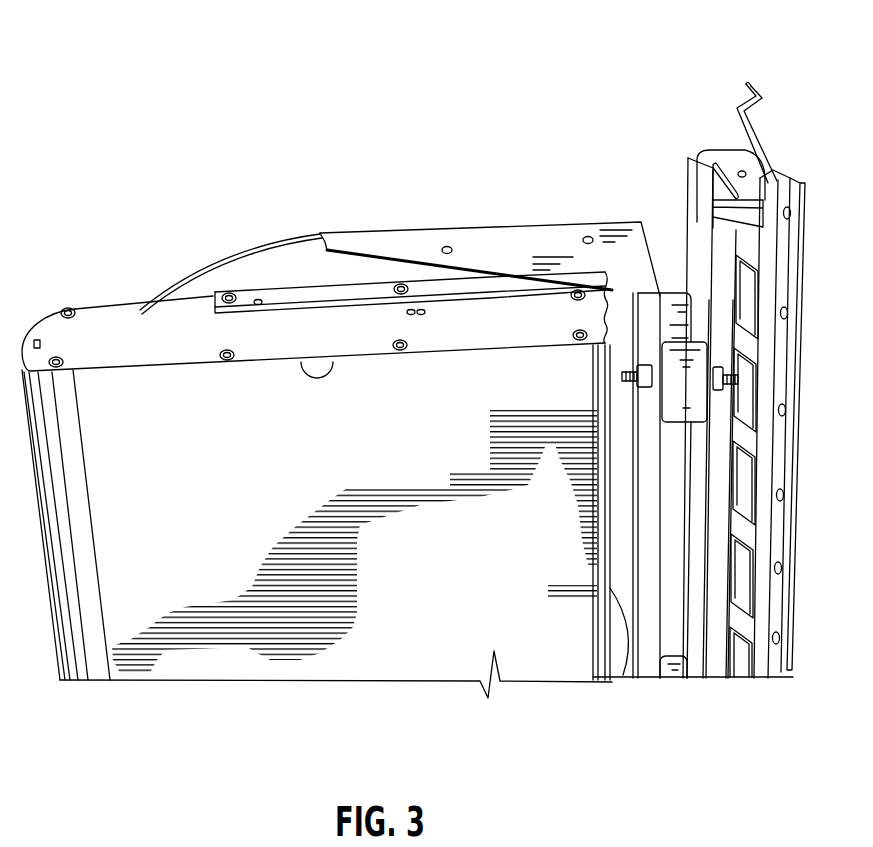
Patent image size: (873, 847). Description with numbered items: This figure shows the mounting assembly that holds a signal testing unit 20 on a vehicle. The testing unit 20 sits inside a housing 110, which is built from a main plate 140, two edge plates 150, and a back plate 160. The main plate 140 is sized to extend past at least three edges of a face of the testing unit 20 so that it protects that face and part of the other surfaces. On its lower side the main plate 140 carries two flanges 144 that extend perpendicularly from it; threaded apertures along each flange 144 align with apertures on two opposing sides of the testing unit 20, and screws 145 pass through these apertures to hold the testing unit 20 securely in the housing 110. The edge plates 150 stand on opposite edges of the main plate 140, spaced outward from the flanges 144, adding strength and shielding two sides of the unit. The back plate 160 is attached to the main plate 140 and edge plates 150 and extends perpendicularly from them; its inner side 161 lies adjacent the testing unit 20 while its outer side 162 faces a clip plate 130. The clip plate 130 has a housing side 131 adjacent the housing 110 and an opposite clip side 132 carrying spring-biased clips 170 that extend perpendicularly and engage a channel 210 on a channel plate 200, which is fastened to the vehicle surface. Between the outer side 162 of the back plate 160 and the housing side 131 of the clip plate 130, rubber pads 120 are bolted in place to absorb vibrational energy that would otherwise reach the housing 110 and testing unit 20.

The signal testing unit 20 is at (484, 574).
The housing 110 is at (448, 236).
The rubber pads 120 is at (675, 307).
The clip plate 130 is at (697, 543).
The housing side 131 is at (697, 220).
The clip side 132 is at (719, 652).
The main plate 140 is at (216, 275).
The flanges 144 is at (336, 295).
The screws 145 is at (234, 296).
The edge plates 150 is at (633, 282).
The back plate 160 is at (641, 552).
The inner side 161 is at (645, 505).
The outer side 162 is at (667, 600).
The clips 170 is at (743, 157).
The channel plate 200 is at (740, 167).
The channel 210 is at (753, 293).